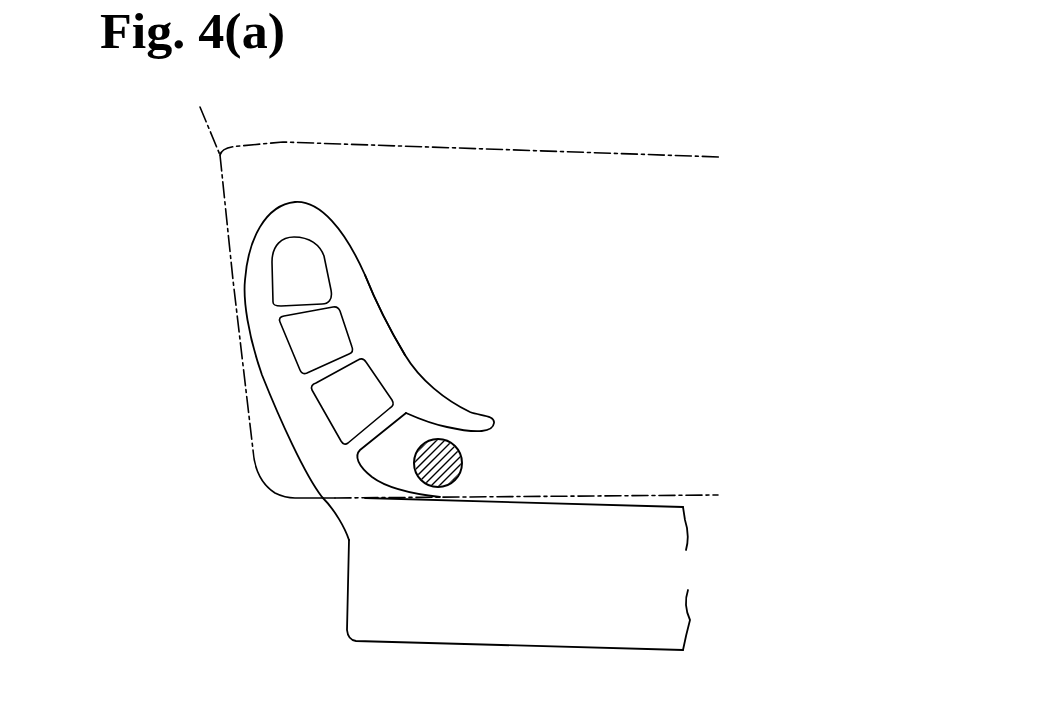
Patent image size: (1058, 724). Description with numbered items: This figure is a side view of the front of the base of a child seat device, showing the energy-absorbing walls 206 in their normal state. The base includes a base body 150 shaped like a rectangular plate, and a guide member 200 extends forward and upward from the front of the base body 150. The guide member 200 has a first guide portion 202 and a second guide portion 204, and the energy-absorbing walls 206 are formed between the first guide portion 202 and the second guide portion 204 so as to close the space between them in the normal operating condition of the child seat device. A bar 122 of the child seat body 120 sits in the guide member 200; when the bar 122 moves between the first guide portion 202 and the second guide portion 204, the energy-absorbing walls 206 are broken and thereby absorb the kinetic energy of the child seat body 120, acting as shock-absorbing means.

The child seat body 120 is at (287, 140).
The bar 122 is at (463, 452).
The base body 150 is at (618, 603).
The guide member 200 is at (317, 368).
The first guide portion 202 is at (302, 425).
The second guide portion 204 is at (373, 337).
The energy-absorbing walls 206 is at (332, 352).